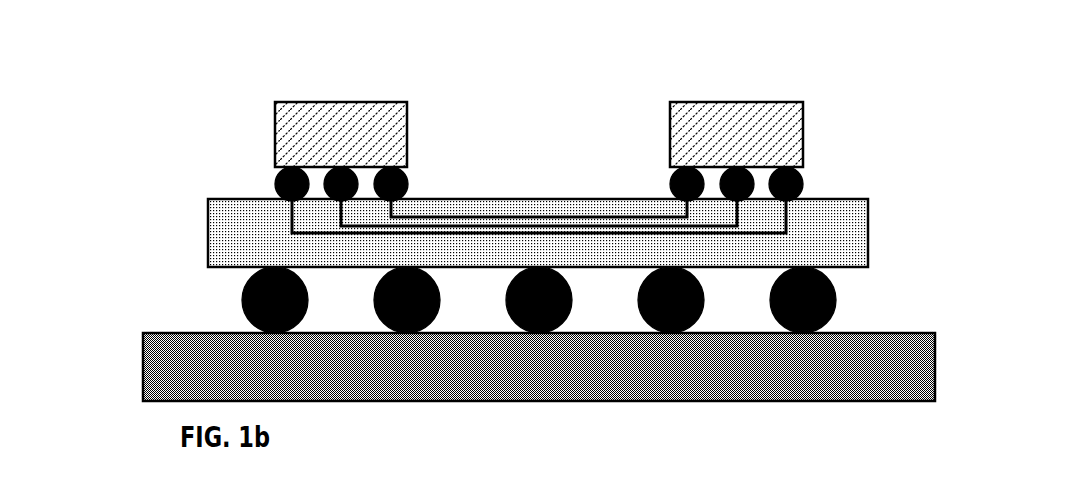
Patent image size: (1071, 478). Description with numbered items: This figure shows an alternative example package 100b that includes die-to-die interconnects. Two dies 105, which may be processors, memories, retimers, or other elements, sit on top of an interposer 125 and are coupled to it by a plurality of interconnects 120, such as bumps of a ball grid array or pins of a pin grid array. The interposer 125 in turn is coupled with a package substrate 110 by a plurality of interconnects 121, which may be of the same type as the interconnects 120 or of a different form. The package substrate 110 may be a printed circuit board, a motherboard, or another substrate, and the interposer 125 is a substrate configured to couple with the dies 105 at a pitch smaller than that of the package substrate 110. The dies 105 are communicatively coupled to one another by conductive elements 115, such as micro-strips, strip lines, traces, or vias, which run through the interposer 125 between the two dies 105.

The package 100b is at (156, 284).
The dies 105 is at (325, 120).
The package substrate 110 is at (858, 392).
The conductive element 115 is at (500, 213).
The interconnects 120 is at (275, 182).
The interconnects 121 is at (838, 293).
The interposer 125 is at (850, 215).